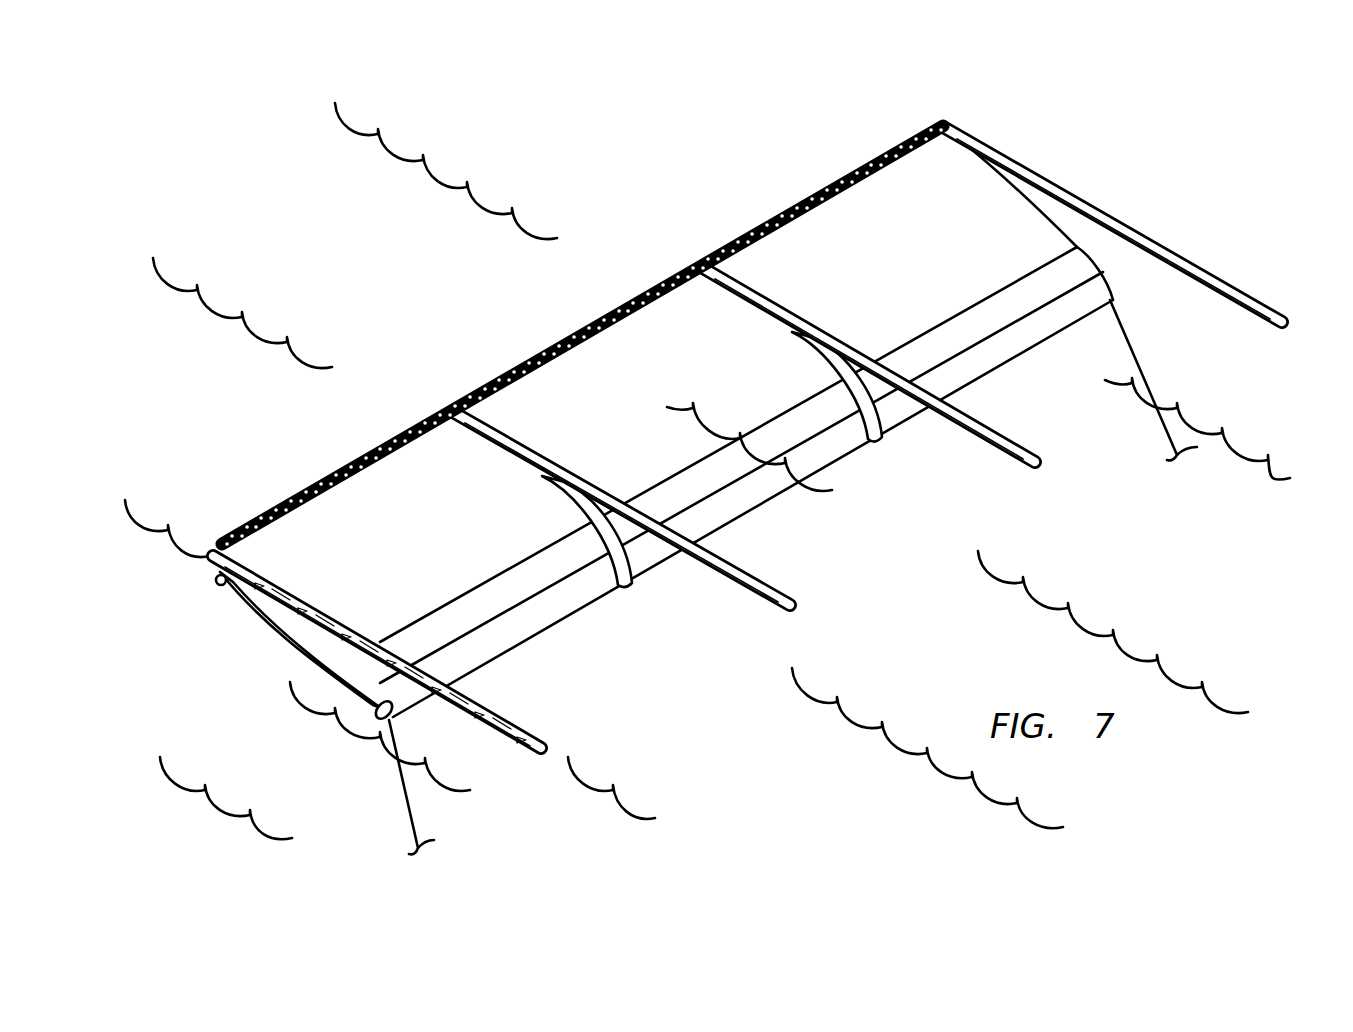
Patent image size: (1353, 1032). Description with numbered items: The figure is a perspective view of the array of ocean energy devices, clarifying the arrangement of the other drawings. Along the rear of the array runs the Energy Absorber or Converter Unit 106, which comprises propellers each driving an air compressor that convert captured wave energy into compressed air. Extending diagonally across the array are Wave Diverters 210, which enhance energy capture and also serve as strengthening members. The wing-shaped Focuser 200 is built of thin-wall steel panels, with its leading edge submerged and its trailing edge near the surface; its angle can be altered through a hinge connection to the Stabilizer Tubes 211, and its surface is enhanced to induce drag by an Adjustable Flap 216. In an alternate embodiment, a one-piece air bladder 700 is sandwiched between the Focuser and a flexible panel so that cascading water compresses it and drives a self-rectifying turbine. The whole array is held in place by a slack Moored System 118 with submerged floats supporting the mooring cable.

The Energy Absorber or Converter Unit 106 is at (230, 528).
The Wave Diverter 210 is at (930, 127).
The Moored System 118 is at (402, 783).
The air bladder 700 is at (872, 437).
The Adjustable Flap 216 is at (475, 618).
The Stabilizer Tube 211 is at (522, 728).
The Focuser 200 is at (378, 712).